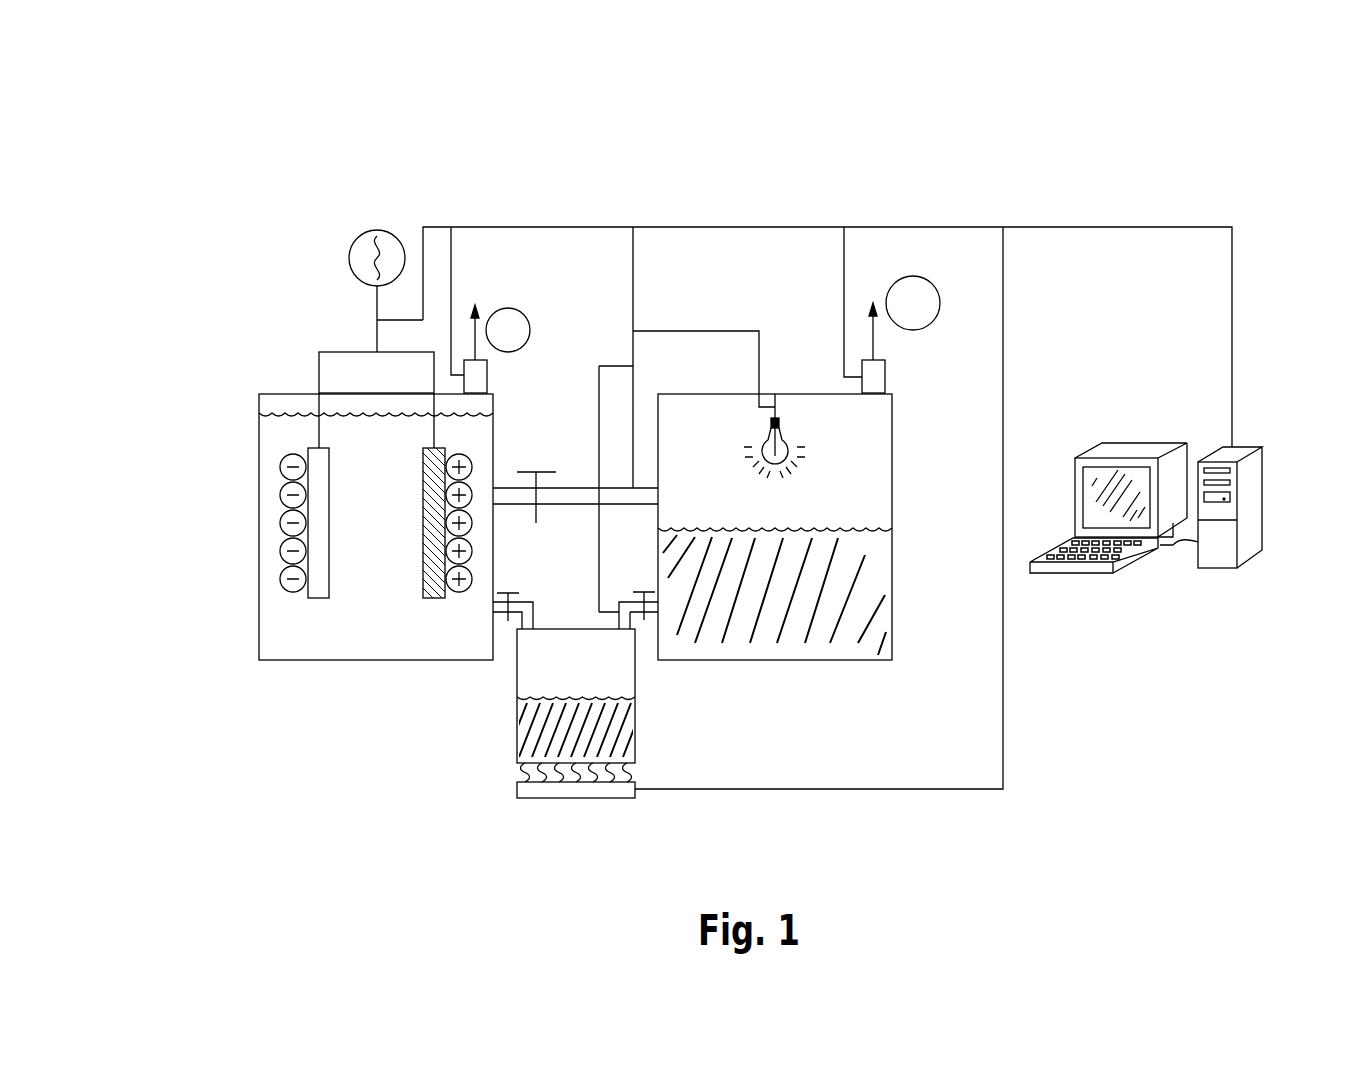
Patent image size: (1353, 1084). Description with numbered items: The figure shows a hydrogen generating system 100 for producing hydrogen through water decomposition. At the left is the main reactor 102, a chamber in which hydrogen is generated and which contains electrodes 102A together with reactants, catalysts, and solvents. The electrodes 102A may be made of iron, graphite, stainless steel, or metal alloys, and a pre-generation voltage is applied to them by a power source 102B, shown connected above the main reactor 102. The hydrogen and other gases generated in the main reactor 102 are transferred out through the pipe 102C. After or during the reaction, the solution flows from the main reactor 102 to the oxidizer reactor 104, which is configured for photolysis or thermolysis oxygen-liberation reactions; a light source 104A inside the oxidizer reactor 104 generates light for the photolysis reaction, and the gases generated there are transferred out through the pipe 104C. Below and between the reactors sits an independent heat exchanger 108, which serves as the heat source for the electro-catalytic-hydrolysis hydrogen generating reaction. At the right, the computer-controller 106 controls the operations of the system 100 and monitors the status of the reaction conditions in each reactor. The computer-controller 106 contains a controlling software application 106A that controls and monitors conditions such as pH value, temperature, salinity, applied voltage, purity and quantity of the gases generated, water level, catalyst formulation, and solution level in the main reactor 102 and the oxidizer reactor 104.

The system 100 is at (240, 156).
The main reactor 102 is at (257, 355).
The electrodes 102A is at (434, 610).
The power source 102B is at (378, 230).
The pipe 102C is at (487, 378).
The oxidizer reactor 104 is at (892, 497).
The light source 104A is at (766, 440).
The pipe 104C is at (885, 376).
The computer-controller 106 is at (1128, 370).
The controlling software application 106A is at (1242, 585).
The heat exchanger 108 is at (664, 743).